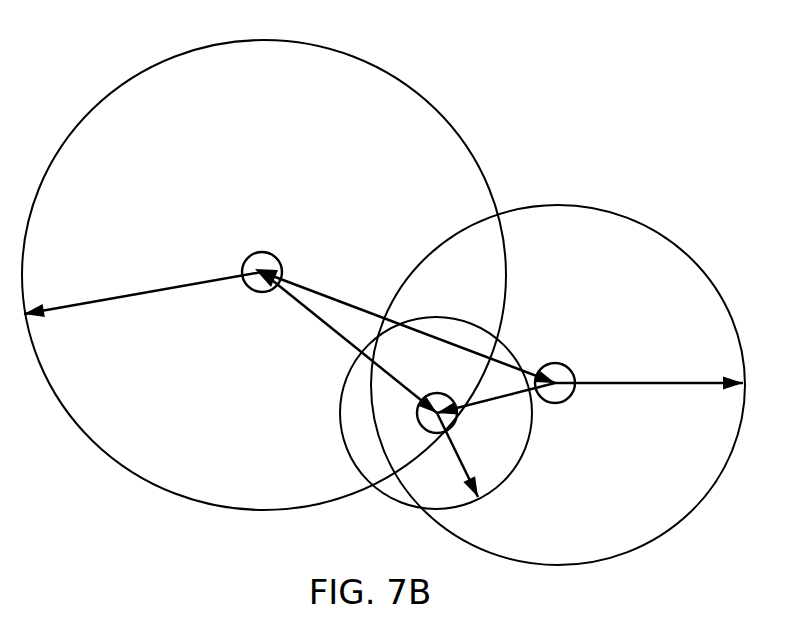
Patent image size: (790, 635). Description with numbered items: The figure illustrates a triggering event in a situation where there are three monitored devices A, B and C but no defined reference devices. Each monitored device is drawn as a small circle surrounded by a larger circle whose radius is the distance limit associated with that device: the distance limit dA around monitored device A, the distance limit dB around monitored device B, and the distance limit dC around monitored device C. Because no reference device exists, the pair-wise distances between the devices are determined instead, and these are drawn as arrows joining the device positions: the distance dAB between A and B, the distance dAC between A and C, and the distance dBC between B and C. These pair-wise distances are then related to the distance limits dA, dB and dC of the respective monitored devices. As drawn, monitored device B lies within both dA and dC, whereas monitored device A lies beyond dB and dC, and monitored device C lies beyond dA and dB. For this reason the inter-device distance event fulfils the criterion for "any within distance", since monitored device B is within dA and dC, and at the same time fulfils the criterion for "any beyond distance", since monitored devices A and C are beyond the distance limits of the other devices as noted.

The monitored device A is at (264, 275).
The monitored device B is at (436, 413).
The monitored device C is at (558, 385).
The distance limit of monitored device A dA is at (143, 284).
The distance limit of monitored device B dB is at (468, 455).
The distance limit of monitored device C dC is at (649, 366).
The pair-wise distance between A and B dAB is at (349, 342).
The pair-wise distance between A and C dAC is at (408, 316).
The pair-wise distance between B and C dBC is at (502, 400).